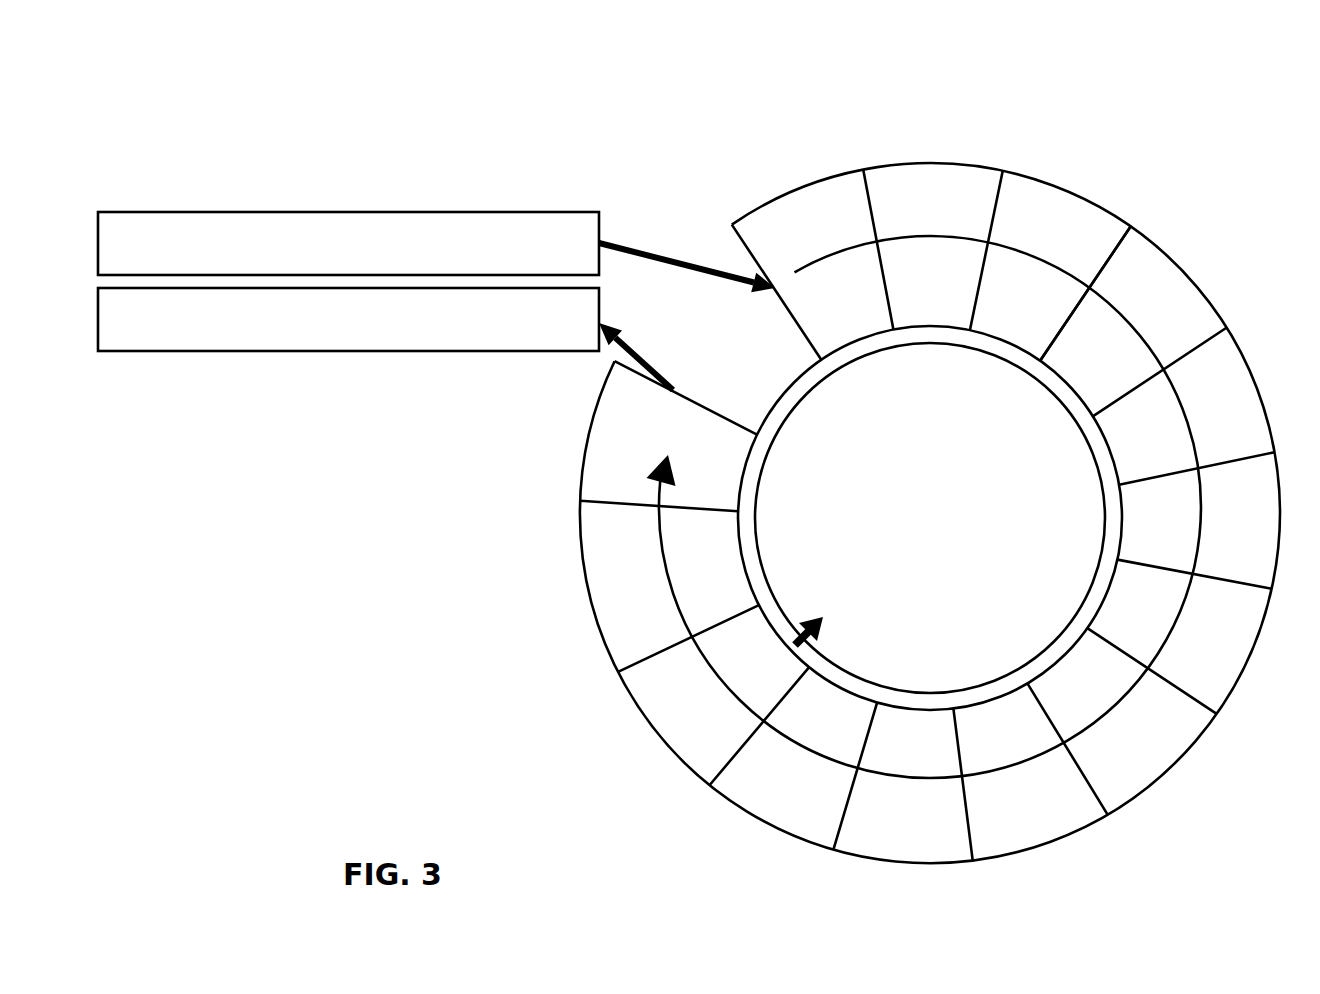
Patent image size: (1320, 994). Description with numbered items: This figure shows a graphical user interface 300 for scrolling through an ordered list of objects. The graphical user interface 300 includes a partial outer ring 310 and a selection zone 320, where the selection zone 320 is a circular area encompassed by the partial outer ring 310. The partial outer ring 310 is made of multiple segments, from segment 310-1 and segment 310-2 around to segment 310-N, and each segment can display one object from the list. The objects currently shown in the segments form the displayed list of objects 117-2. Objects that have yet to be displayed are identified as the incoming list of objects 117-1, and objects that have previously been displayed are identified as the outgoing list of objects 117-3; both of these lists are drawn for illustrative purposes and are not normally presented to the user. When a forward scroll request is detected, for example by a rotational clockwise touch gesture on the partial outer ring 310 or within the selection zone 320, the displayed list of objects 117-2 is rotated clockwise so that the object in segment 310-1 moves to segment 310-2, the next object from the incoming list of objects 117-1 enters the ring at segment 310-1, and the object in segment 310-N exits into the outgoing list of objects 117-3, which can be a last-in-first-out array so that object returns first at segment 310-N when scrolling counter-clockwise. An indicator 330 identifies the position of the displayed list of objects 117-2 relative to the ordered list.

The graphical user interface 300 is at (186, 63).
The partial outer ring 310 is at (912, 139).
The segment 310-1 is at (780, 233).
The segment 310-2 is at (903, 204).
The segment 310-N is at (600, 440).
The selection zone 320 is at (912, 546).
The indicator 330 is at (822, 632).
The incoming list of objects 117-1 is at (368, 212).
The displayed list of objects 117-2 is at (1040, 254).
The outgoing list of objects 117-3 is at (357, 353).